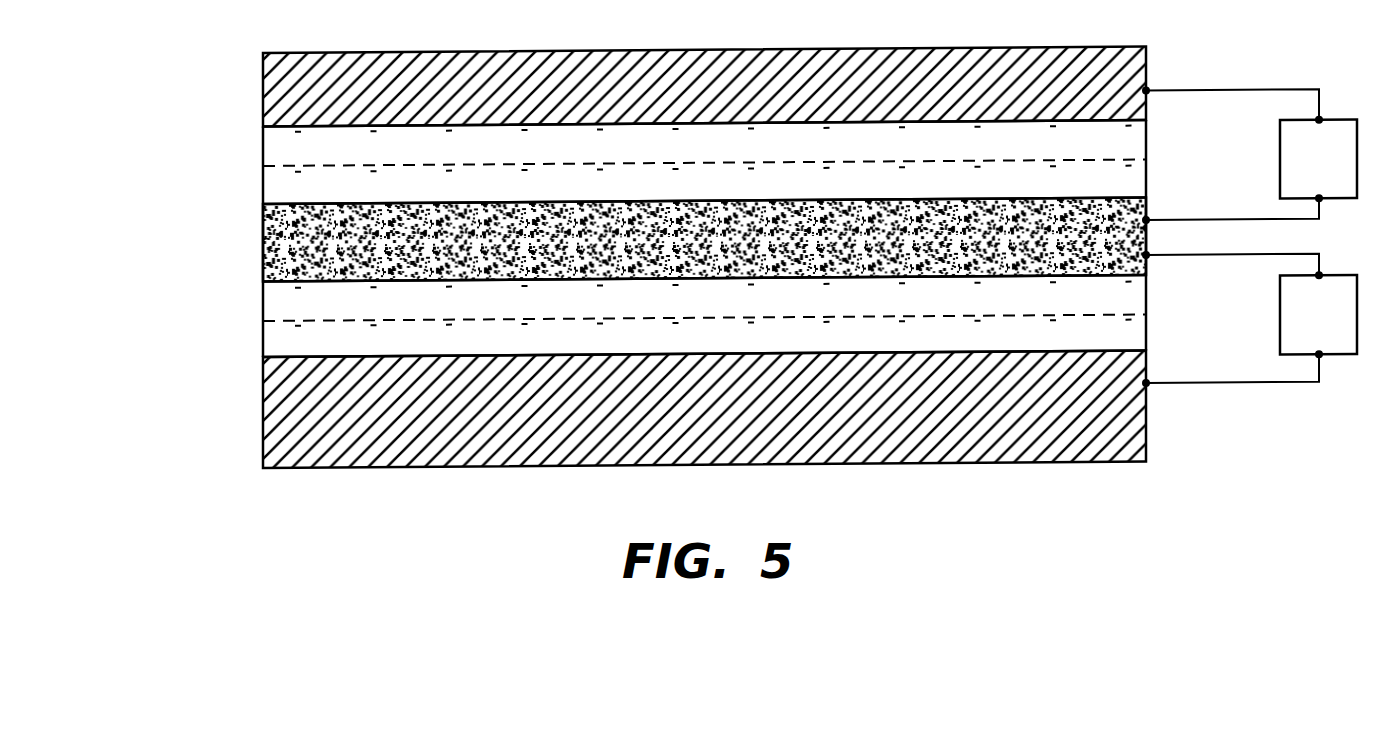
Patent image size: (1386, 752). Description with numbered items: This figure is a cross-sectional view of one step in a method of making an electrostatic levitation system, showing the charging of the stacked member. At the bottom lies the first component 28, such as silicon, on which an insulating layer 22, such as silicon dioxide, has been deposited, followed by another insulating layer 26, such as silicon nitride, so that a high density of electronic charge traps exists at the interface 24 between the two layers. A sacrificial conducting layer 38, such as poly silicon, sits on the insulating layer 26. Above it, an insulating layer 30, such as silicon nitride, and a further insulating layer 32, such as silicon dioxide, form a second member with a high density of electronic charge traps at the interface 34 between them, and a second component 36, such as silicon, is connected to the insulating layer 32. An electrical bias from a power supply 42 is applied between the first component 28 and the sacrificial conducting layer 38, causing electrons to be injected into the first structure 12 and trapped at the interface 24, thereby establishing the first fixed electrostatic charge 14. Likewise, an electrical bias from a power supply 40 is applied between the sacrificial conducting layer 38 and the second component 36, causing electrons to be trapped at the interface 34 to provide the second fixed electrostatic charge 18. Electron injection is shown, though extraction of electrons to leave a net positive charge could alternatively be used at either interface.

The first structure 12 is at (210, 348).
The first fixed electrostatic charge 14 is at (210, 302).
The second fixed electrostatic charge 18 is at (210, 141).
The insulating layer 22 is at (1140, 346).
The interface 24 is at (1160, 323).
The insulating layer 26 is at (1140, 298).
The first component 28 is at (1146, 456).
The insulating layer 30 is at (1140, 192).
The insulating layer 32 is at (1140, 142).
The interface 34 is at (1160, 165).
The second component 36 is at (1146, 78).
The sacrificial conducting layer 38 is at (1146, 250).
The power supply 40 is at (1249, 154).
The power supply 42 is at (1249, 318).